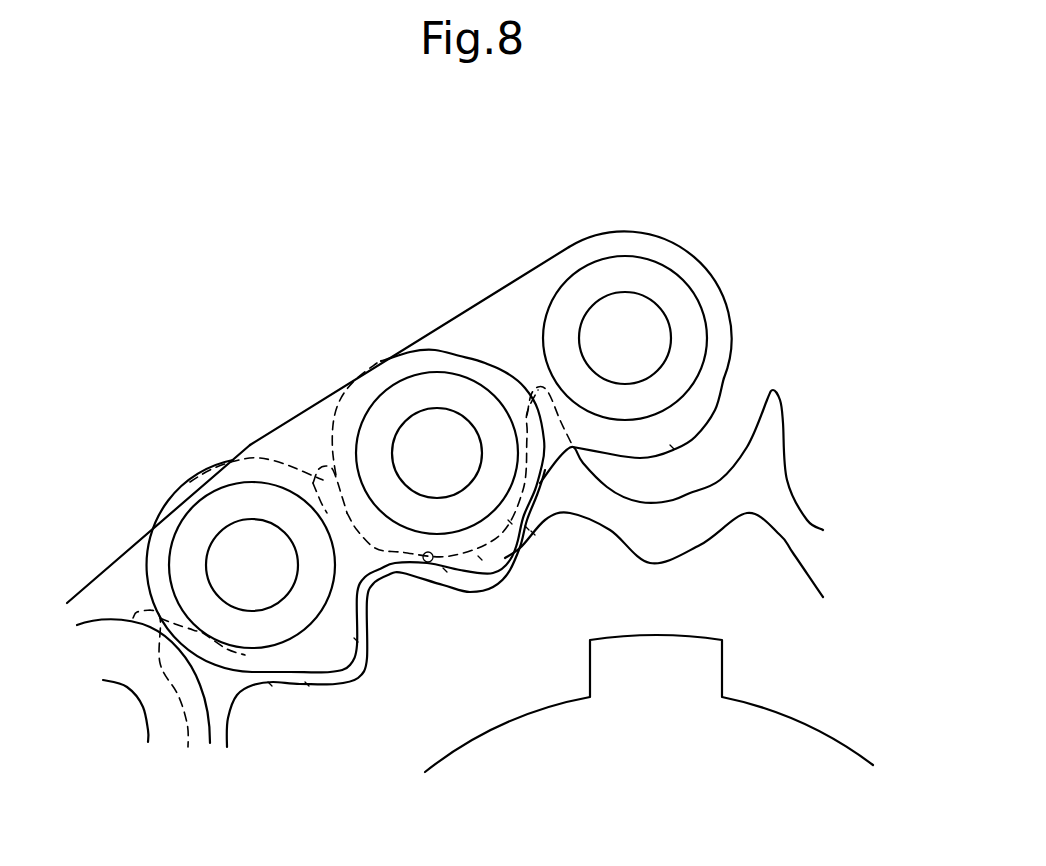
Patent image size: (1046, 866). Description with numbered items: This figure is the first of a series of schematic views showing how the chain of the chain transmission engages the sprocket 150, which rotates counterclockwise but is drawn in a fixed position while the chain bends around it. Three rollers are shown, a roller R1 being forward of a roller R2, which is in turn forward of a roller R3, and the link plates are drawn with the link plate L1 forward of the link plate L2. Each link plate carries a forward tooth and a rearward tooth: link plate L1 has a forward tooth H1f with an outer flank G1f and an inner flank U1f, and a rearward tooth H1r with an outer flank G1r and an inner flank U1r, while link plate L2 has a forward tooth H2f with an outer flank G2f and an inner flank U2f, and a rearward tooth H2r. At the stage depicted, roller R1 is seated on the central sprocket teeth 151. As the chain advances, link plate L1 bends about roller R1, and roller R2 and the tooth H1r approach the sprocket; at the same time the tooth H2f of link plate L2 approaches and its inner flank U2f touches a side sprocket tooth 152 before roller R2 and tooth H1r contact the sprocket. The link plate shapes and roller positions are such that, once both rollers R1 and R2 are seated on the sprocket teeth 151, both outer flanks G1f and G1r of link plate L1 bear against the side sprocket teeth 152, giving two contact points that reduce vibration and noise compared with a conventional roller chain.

The roller R1 is at (190, 515).
The roller R2 is at (390, 390).
The roller R3 is at (625, 256).
The link plate L1 is at (293, 438).
The link plate L2 is at (513, 305).
The sprocket 150 is at (711, 761).
The sprocket teeth 151 is at (786, 426).
The side sprocket teeth 152 is at (796, 556).
The outer flank of forward tooth G1f is at (270, 684).
The outer flank of rearward tooth G1r is at (527, 528).
The outer flank of forward tooth G2f is at (422, 562).
The forward link plate tooth H1f is at (307, 684).
The rearward link plate tooth H1r is at (480, 557).
The forward link plate tooth H2f is at (510, 522).
The rearward link plate tooth H2r is at (672, 447).
The inner flank of forward tooth U1f is at (356, 640).
The inner flank of rearward tooth U1r is at (445, 570).
The inner flank of forward tooth U2f is at (533, 533).